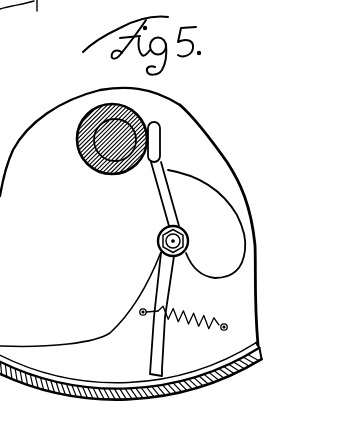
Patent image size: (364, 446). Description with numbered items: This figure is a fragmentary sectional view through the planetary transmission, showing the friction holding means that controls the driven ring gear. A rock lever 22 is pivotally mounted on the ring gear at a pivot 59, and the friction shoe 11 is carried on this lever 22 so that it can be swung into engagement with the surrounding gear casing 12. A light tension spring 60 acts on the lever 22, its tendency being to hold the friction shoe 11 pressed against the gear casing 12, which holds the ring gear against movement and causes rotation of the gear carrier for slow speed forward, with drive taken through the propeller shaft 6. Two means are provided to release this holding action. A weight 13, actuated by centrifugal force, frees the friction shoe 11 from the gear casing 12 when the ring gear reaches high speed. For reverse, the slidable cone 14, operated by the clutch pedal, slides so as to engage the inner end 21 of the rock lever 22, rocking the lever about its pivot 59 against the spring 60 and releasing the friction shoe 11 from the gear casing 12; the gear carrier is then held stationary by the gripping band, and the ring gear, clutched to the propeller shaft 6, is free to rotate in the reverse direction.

The propeller shaft 6 is at (83, 152).
The friction shoe 11 is at (12, 359).
The gear casing 12 is at (212, 377).
The weight 13 is at (217, 203).
The slidable cone 14 is at (98, 173).
The inner end of rock lever 21 is at (158, 127).
The rock lever 22 is at (167, 267).
The pivot 59 is at (177, 255).
The tension spring 60 is at (190, 316).